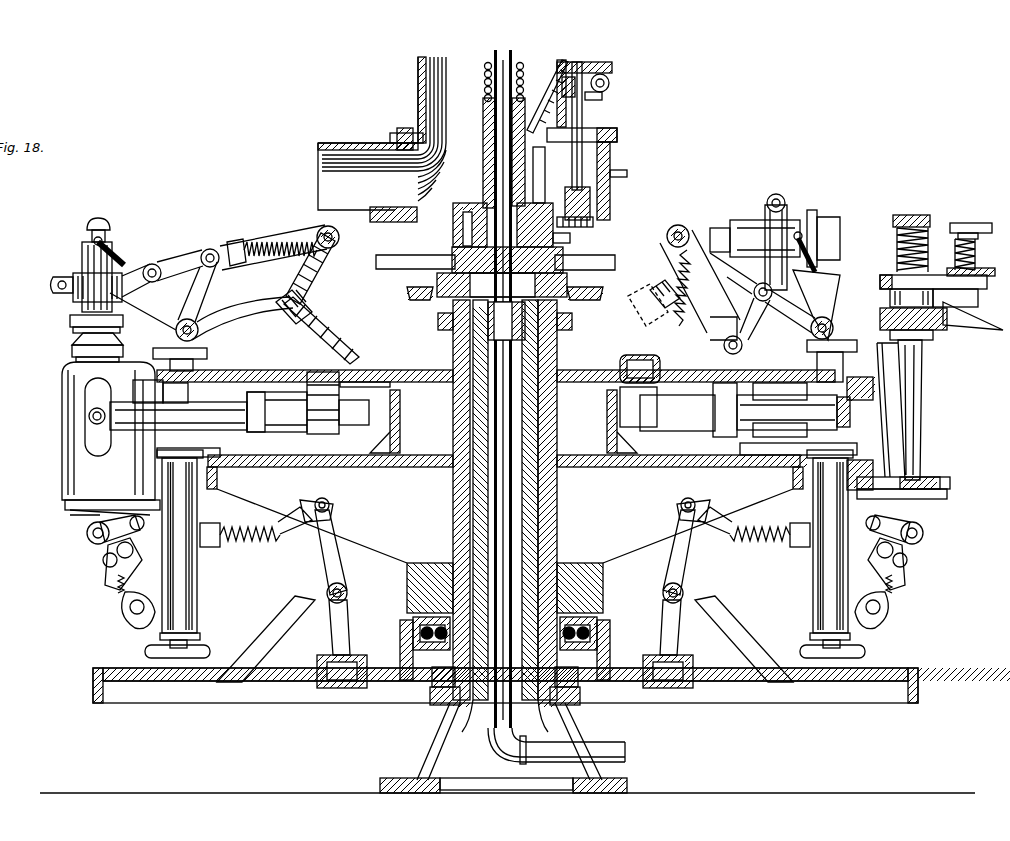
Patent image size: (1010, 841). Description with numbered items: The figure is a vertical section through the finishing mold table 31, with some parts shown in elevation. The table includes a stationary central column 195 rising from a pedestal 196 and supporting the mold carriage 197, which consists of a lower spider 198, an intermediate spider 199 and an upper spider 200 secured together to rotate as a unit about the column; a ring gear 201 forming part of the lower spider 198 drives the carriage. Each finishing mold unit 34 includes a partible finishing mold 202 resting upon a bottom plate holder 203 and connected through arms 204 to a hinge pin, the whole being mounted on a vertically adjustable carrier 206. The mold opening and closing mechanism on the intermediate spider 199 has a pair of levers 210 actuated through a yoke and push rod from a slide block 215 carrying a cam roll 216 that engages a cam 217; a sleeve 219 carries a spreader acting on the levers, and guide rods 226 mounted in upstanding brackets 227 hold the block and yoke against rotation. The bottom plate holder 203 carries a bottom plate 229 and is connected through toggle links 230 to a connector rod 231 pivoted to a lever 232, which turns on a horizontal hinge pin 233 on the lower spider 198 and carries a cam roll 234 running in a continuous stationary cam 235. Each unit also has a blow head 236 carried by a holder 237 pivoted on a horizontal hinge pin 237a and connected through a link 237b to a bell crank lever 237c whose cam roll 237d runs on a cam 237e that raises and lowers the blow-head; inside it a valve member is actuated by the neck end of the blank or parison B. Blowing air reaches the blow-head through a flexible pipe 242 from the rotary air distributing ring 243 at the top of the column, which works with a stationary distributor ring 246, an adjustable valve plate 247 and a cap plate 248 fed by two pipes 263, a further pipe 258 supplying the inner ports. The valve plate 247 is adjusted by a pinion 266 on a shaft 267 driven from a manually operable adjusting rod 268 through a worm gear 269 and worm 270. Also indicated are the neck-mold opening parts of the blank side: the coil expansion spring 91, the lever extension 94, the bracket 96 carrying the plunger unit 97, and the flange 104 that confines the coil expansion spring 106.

The finishing mold table 31 is at (743, 158).
The finishing mold unit 34 is at (70, 298).
The coil expansion spring 91 is at (978, 248).
The extension 94 is at (970, 223).
The bracket 96 is at (935, 333).
The plunger unit 97 is at (890, 296).
The flange 104 is at (912, 215).
The coil expansion spring 106 is at (897, 245).
The stationary central column 195 is at (562, 512).
The pedestal 196 is at (418, 770).
The mold carriage 197 is at (505, 500).
The lower spider 198 is at (302, 598).
The intermediate spider 199 is at (296, 470).
The upper spider 200 is at (408, 298).
The ring gear 201 is at (910, 703).
The partible finishing mold 202 is at (65, 455).
The bottom plate holder 203 is at (68, 510).
The arms 204 is at (150, 371).
The vertically adjustable carrier 206 is at (127, 622).
The levers 210 is at (118, 450).
The slide block 215 is at (330, 437).
The cam roll 216 is at (318, 372).
The cam 217 is at (655, 360).
The sleeve 219 is at (262, 400).
The guide rods 226 is at (384, 405).
The upstanding brackets 227 is at (400, 435).
The bottom plate 229 is at (925, 480).
The toggle links 230 is at (100, 560).
The connector rod 231 is at (248, 540).
The lever 232 is at (342, 550).
The horizontal hinge pin 233 is at (333, 612).
The cam roll 234 is at (318, 672).
The continuous stationary cam 235 is at (340, 690).
The blow head 236 is at (128, 270).
The holder 237 is at (818, 298).
The horizontal hinge pin 237a is at (200, 338).
The link 237b is at (754, 352).
The bell crank lever 237c is at (322, 305).
The cam roll 237d is at (635, 320).
The cam 237e is at (330, 326).
The flexible pipe 242 is at (818, 276).
The rotary air distributing ring 243 is at (630, 304).
The stationary distributor ring 246 is at (452, 250).
The adjustable valve plate 247 is at (455, 236).
The cap plate 248 is at (453, 212).
The pipe 258 is at (572, 240).
The pipes 263 is at (570, 128).
The pinion 266 is at (595, 210).
The shaft 267 is at (590, 115).
The manually operable adjusting rod 268 is at (610, 80).
The worm gear 269 is at (603, 100).
The worm 270 is at (610, 90).
The blank or parison B is at (908, 425).